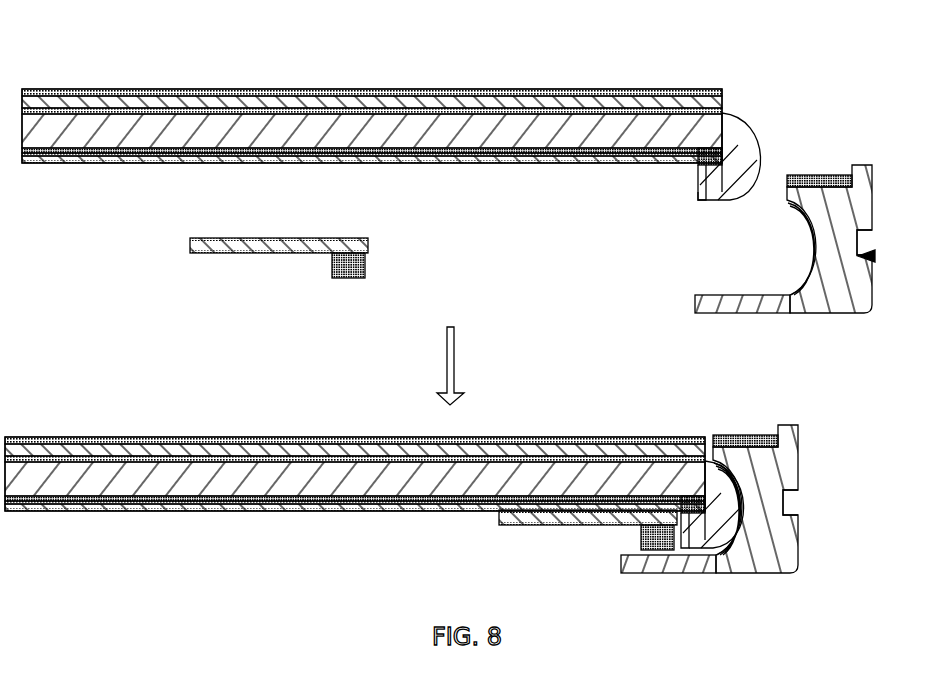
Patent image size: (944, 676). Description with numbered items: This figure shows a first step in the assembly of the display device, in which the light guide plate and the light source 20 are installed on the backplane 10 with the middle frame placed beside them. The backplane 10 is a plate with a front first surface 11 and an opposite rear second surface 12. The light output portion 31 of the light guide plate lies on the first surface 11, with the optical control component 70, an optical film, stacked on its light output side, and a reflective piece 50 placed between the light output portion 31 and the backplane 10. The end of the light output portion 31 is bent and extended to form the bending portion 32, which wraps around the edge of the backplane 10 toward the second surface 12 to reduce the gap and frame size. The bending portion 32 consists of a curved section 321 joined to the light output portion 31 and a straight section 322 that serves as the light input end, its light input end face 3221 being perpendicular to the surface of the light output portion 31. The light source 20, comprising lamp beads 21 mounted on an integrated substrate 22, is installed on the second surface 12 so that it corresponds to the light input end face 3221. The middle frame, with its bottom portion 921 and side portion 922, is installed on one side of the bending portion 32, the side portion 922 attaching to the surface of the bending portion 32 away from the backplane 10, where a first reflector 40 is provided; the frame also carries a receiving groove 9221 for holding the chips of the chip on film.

The backplane 10 is at (403, 146).
The optical control component 70 is at (272, 108).
The light output portion 31 is at (632, 130).
The reflective piece 50 is at (520, 150).
The first surface 11 is at (84, 149).
The second surface 12 is at (165, 157).
The bending portion 32 is at (801, 53).
The straight section 322 is at (728, 150).
The curved section 321 is at (707, 190).
The light input end face 3221 is at (698, 192).
The light source 20 is at (340, 338).
The integrated substrate 22 is at (300, 253).
The lamp bead 21 is at (345, 279).
The bottom portion 921 is at (762, 300).
The side portion 922 is at (850, 212).
The receiving groove 9221 is at (875, 260).
The first reflector 40 is at (812, 250).